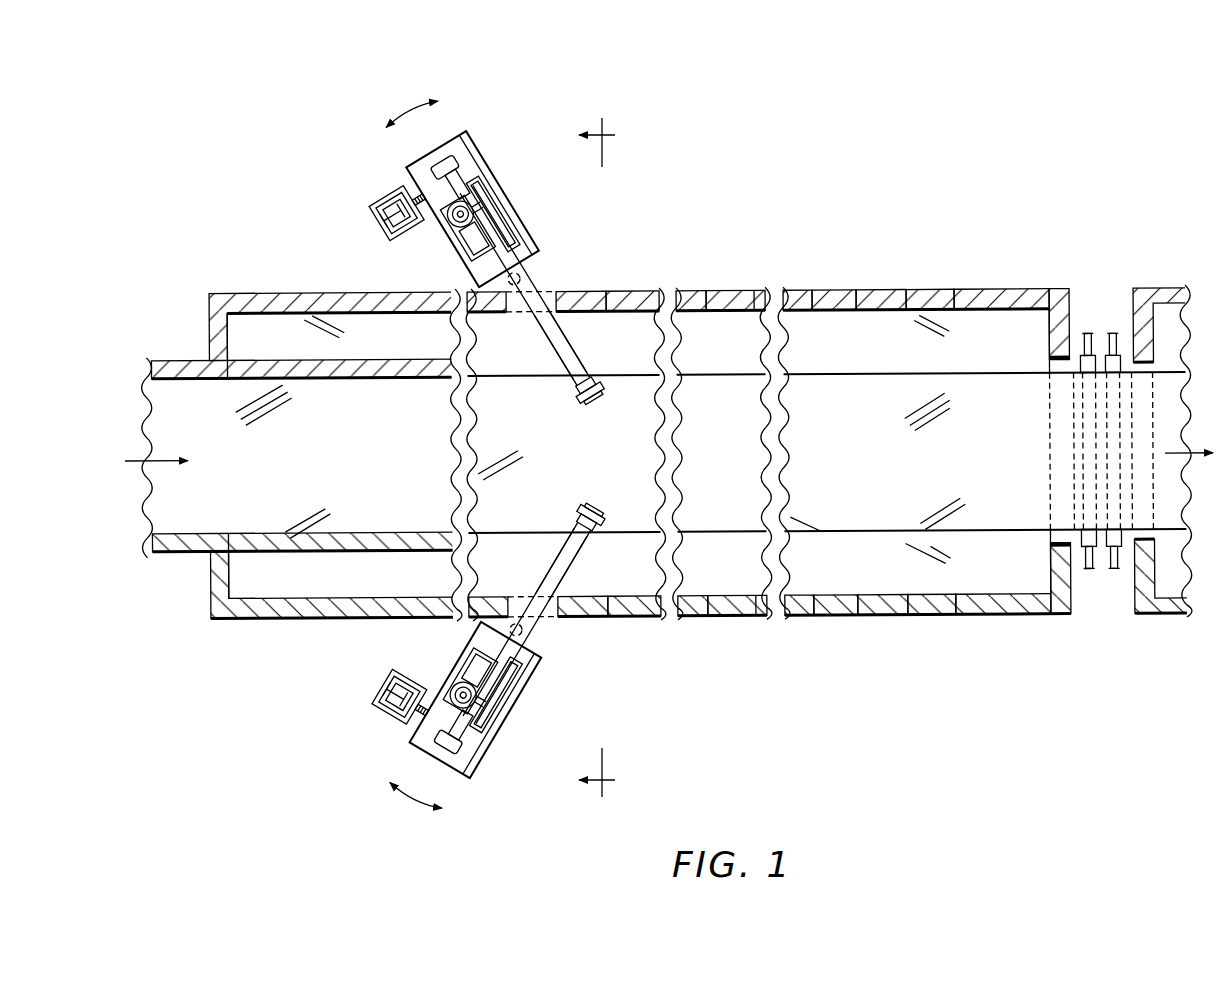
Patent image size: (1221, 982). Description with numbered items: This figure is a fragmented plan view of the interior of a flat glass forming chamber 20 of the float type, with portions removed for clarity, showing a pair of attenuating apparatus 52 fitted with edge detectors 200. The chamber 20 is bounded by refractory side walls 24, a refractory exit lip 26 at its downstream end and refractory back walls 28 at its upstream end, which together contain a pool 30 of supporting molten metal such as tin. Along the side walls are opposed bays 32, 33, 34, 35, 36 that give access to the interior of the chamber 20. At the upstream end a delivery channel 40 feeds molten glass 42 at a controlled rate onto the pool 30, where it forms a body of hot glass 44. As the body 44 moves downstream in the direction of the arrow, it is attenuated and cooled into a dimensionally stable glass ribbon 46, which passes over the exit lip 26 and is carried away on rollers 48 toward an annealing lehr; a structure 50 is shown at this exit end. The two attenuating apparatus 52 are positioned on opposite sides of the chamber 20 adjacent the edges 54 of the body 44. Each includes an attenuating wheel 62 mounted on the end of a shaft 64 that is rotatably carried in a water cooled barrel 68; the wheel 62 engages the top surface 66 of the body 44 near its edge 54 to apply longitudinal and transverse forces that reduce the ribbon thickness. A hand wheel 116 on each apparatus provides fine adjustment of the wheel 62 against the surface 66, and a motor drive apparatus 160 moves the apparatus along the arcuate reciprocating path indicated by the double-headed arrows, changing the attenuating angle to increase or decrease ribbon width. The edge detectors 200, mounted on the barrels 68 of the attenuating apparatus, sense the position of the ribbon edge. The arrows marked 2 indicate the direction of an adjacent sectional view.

The section line 2- 2 is at (607, 457).
The flat glass forming chamber 20 is at (801, 640).
The refractory side walls 24 is at (695, 297).
The refractory exit lip 26 is at (1072, 305).
The refractory back walls 28 is at (208, 309).
The pool of supporting molten metal 30 is at (967, 354).
The bay 32 is at (560, 292).
The bay 33 is at (631, 297).
The bay 34 is at (733, 297).
The bay 35 is at (837, 297).
The bay 36 is at (931, 291).
The delivery channel 40 is at (180, 356).
The molten glass 42 is at (150, 395).
The body of hot glass 44 is at (326, 425).
The glass ribbon 46 is at (989, 443).
The rollers 48 is at (1087, 573).
The outlet flange 50 is at (1168, 614).
The attenuating apparatus 52 is at (506, 148).
The edges 54 is at (620, 374).
The attenuating wheel 62 is at (592, 394).
The shaft 64 is at (572, 397).
The top surface 66 is at (566, 457).
The water cooled barrel 68 is at (536, 340).
The hand wheel 116 is at (458, 222).
The motor drive apparatus 160 is at (382, 187).
The edge detector 200 is at (528, 276).